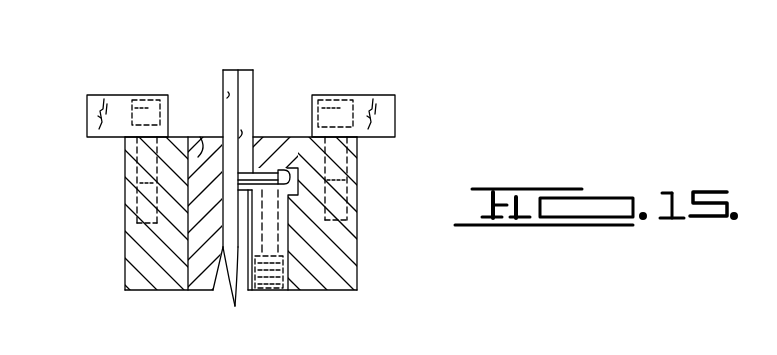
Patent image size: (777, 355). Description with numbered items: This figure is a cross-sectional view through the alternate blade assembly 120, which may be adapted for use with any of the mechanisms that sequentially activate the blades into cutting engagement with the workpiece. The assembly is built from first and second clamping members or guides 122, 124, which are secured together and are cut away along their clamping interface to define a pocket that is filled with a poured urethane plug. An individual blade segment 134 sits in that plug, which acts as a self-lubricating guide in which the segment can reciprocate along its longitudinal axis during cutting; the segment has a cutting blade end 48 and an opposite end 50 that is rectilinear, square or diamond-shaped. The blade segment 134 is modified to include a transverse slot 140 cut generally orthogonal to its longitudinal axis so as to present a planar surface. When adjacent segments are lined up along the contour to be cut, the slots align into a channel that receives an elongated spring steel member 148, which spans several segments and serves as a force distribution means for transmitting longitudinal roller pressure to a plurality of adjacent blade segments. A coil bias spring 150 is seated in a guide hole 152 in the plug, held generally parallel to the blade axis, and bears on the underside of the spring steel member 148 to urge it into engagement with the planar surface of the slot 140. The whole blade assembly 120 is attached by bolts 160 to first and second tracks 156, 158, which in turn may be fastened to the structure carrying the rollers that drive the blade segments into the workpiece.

The blade end 48 is at (241, 297).
The end opposite the blade end 50 is at (232, 70).
The alternate blade assembly 120 is at (420, 178).
The first clamping member 122 is at (125, 228).
The second clamping member 124 is at (358, 278).
The blade segment 134 is at (256, 80).
The transverse slot 140 is at (246, 190).
The spring steel member 148 is at (268, 171).
The coil bias spring 150 is at (283, 253).
The guide hole 152 is at (200, 137).
The first track 156 is at (91, 107).
The second track 158 is at (383, 103).
The bolt 160 is at (147, 98).